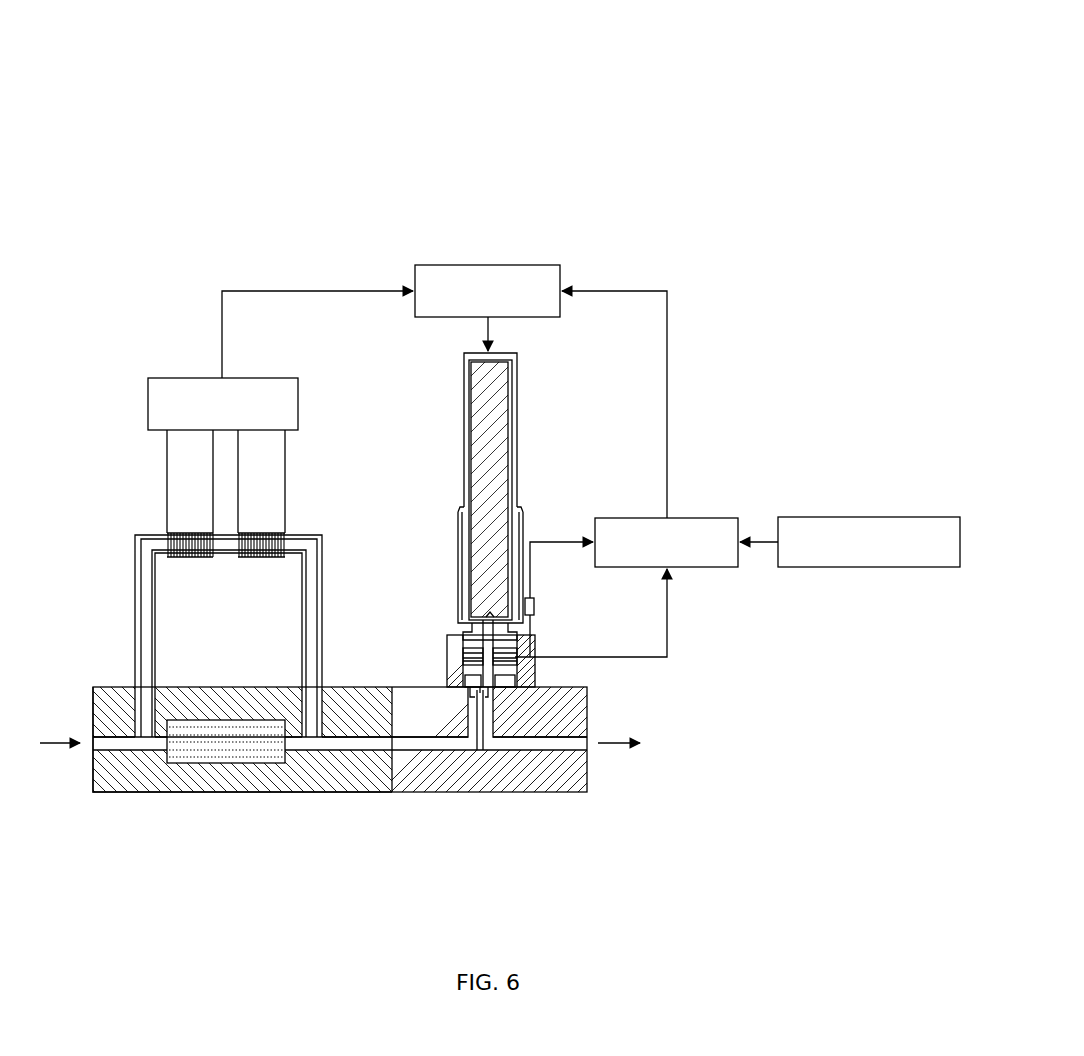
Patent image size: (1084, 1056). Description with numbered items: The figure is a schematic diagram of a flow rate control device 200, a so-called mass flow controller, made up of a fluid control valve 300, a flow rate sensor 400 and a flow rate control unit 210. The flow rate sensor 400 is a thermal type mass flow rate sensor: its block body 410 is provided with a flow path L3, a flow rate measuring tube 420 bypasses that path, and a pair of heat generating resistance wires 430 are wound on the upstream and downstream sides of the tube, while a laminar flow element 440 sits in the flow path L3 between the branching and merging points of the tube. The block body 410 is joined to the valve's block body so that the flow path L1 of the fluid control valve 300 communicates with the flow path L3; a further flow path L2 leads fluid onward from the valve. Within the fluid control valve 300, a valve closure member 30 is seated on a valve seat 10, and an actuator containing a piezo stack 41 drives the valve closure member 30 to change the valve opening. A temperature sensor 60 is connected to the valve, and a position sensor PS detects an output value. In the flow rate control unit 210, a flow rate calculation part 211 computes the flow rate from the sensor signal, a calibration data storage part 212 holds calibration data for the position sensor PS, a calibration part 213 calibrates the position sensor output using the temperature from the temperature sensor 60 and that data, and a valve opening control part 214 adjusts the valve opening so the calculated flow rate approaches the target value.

The flow rate control device 200 is at (258, 150).
The flow rate control unit 210 is at (620, 263).
The flow rate calculation part 211 is at (298, 405).
The calibration data storage part 212 is at (866, 517).
The calibration part 213 is at (700, 518).
The valve opening control part 214 is at (437, 265).
The fluid control valve 300 is at (547, 419).
The piezo stack 41 is at (497, 533).
The temperature sensor 60 is at (534, 604).
The position sensor PS is at (538, 648).
The valve closure member 30 is at (535, 671).
The valve seat 10 is at (457, 690).
The block body 410 is at (145, 792).
The laminar flow element 440 is at (227, 763).
The flow rate sensor 400 is at (188, 583).
The flow rate measuring tube 420 is at (135, 582).
The heat generating resistance wires 430 is at (198, 557).
The flow path L1 is at (435, 742).
The second flow path L2 is at (578, 742).
The flow path L3 is at (352, 742).